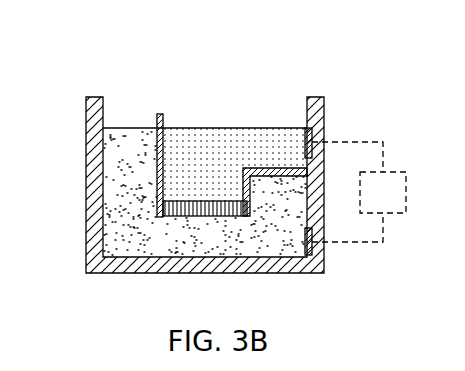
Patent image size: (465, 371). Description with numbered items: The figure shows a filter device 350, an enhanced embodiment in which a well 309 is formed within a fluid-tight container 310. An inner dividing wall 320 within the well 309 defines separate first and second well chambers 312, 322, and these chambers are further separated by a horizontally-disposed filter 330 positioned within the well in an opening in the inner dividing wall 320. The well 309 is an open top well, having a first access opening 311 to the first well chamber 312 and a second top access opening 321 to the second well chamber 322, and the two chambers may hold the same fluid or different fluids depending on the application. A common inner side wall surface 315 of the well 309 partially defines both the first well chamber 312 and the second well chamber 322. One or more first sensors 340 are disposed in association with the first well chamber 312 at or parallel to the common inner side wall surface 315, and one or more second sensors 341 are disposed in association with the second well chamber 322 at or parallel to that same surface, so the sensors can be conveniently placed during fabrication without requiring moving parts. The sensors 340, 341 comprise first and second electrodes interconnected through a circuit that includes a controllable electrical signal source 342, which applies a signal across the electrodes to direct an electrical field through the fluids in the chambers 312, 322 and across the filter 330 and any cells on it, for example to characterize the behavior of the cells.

The filter device 350 is at (87, 28).
The fluid-tight container 310 is at (97, 148).
The first access opening 311 is at (130, 113).
The well 309 is at (130, 178).
The first well chamber 312 is at (133, 213).
The inner dividing wall 320 is at (160, 113).
The second top access opening 321 is at (280, 113).
The second well chamber 322 is at (250, 136).
The horizontally-disposed filter 330 is at (198, 216).
The common inner side wall surface 315 is at (305, 197).
The second sensor 341 is at (312, 140).
The first sensor 340 is at (312, 252).
The controllable electrical signal source 342 is at (397, 214).